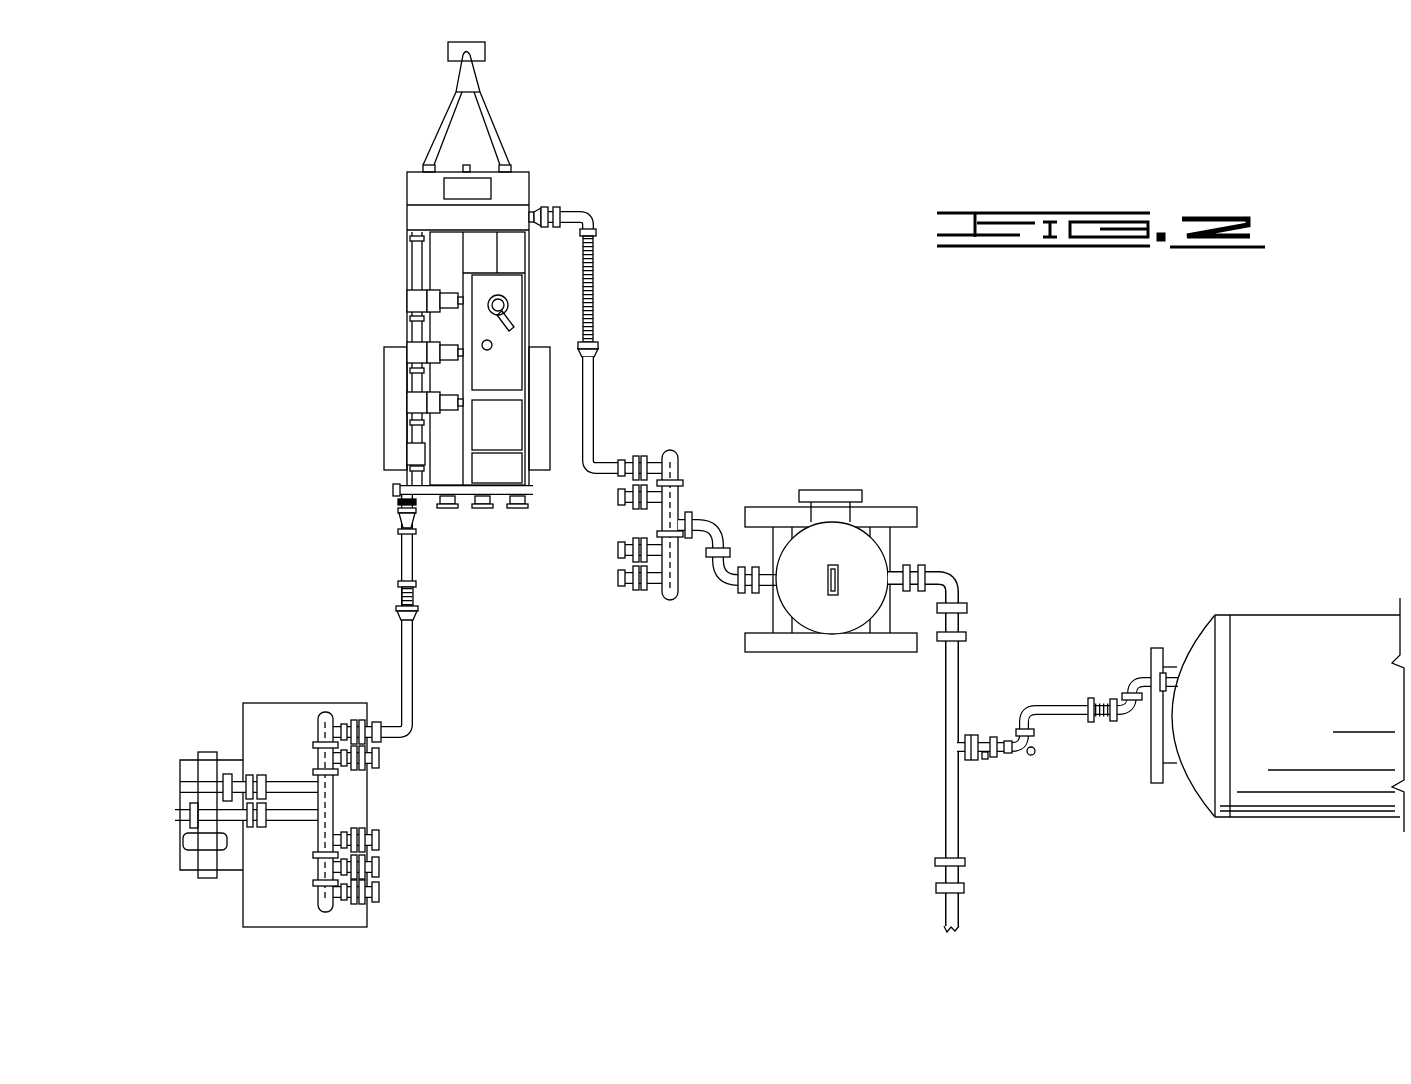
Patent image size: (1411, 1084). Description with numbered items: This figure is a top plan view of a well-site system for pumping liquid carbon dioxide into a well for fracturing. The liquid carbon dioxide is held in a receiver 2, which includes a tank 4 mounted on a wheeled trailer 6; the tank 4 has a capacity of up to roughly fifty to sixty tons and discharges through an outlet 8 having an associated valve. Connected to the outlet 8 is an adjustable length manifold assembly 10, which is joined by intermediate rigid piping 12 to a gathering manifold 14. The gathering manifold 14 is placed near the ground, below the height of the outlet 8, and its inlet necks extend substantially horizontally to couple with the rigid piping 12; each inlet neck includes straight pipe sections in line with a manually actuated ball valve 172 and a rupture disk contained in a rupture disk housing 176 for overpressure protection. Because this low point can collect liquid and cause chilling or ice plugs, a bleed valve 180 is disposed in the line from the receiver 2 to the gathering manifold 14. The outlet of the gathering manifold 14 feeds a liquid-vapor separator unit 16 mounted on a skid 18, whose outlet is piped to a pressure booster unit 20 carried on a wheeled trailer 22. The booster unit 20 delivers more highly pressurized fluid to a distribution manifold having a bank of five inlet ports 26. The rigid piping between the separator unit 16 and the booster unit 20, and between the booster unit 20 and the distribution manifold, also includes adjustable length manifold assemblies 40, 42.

The receiver 2 is at (1288, 695).
The tank 4 is at (1310, 684).
The wheeled trailer 6 is at (1151, 743).
The outlet 8 is at (1167, 672).
The adjustable length manifold assembly 10 is at (1098, 688).
The rigid piping 12 is at (1012, 765).
The gathering manifold 14 is at (943, 806).
The liquid-vapor separator unit 16 is at (828, 643).
The skid 18 is at (884, 507).
The pressure booster unit 20 is at (541, 179).
The wheeled trailer 22 is at (495, 118).
The inlet ports 26 is at (372, 906).
The adjustable length manifold assembly 40 is at (599, 344).
The adjustable length manifold assembly 42 is at (421, 608).
The ball valve 172 is at (970, 735).
The rupture disk housing 176 is at (982, 760).
The bleed valve 180 is at (1032, 755).